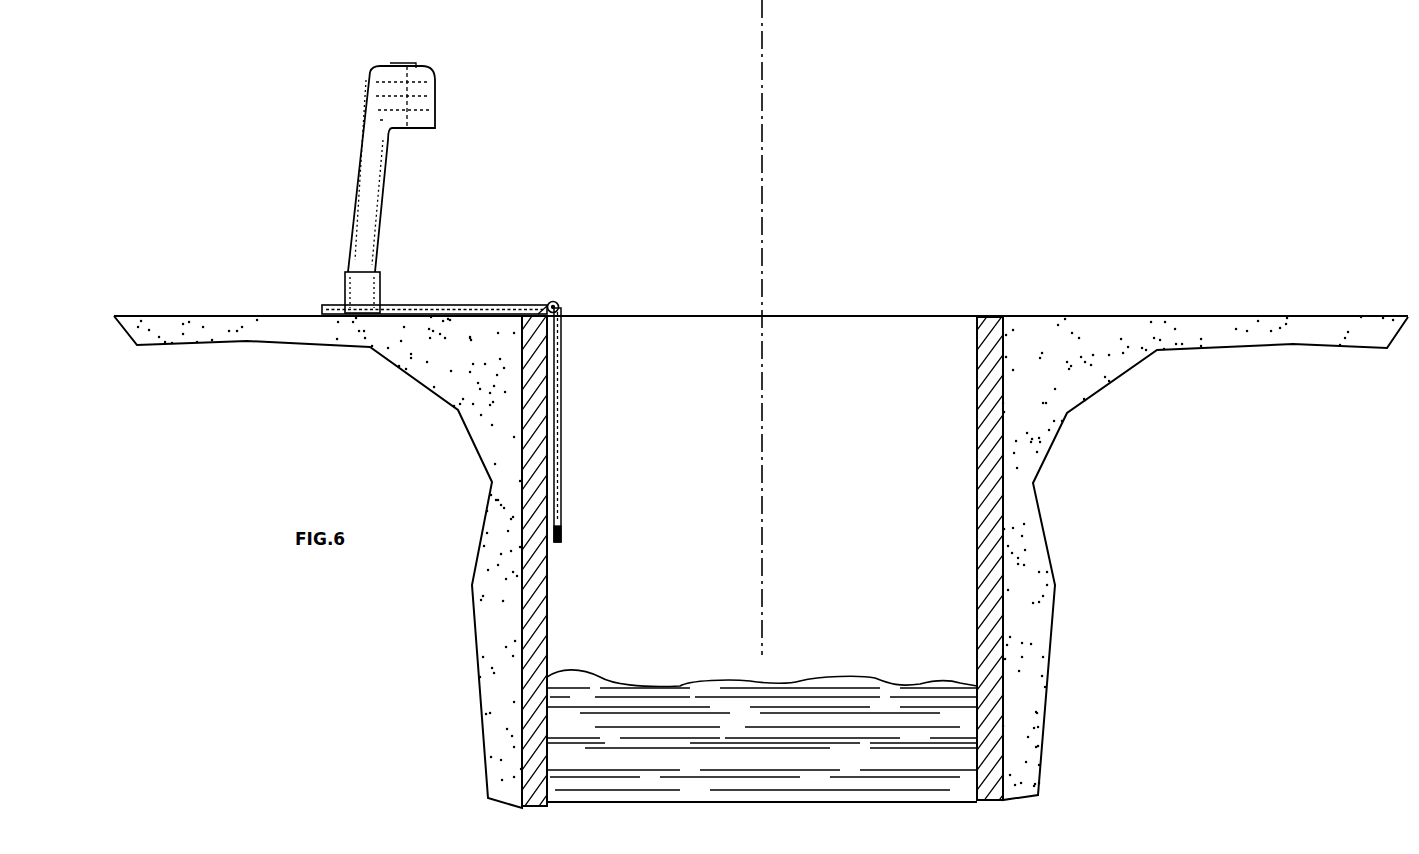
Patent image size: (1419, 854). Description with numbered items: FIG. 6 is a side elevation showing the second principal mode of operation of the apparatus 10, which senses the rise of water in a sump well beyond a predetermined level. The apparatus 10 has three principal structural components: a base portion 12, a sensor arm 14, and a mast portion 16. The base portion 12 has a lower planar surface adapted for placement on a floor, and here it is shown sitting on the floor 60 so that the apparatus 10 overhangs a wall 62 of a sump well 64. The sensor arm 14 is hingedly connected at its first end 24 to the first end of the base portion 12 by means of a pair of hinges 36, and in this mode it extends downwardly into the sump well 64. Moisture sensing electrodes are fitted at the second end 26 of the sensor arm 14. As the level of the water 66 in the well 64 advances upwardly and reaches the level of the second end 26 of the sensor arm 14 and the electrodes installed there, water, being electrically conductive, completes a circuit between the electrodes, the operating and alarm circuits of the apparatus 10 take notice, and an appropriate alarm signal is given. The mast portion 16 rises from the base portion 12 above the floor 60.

The apparatus 10 is at (570, 122).
The base portion 12 is at (446, 305).
The sensor arm 14 is at (562, 422).
The mast portion 16 is at (375, 182).
The first end of the sensor arm 24 is at (579, 299).
The second end of the sensor arm 26 is at (581, 533).
The hinges 36 is at (554, 302).
The floor 60 is at (1095, 318).
The wall 62 is at (985, 333).
The sump well 64 is at (870, 504).
The water 66 is at (628, 710).